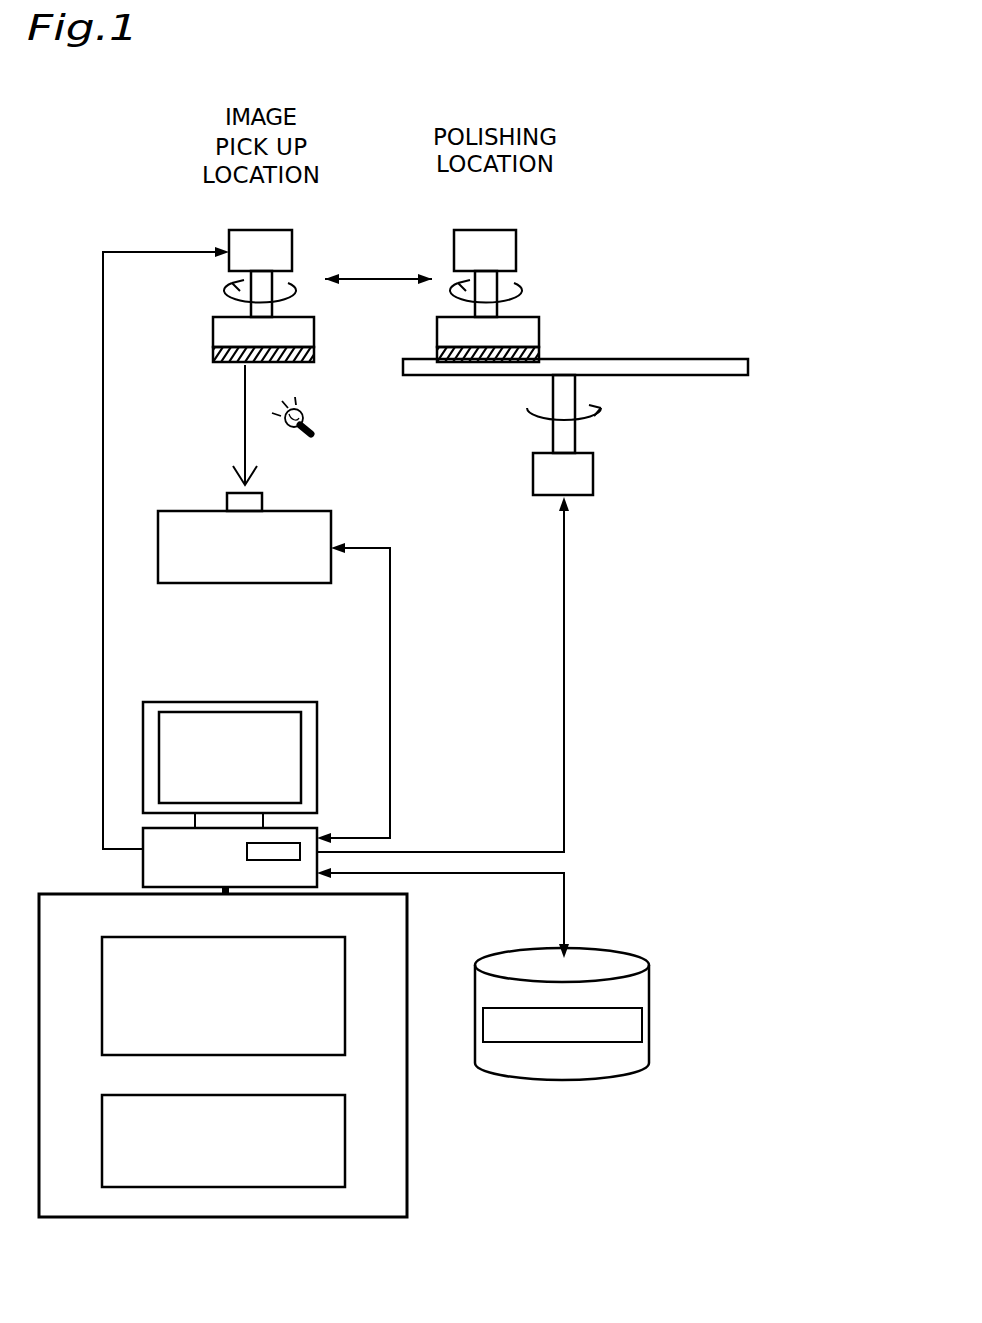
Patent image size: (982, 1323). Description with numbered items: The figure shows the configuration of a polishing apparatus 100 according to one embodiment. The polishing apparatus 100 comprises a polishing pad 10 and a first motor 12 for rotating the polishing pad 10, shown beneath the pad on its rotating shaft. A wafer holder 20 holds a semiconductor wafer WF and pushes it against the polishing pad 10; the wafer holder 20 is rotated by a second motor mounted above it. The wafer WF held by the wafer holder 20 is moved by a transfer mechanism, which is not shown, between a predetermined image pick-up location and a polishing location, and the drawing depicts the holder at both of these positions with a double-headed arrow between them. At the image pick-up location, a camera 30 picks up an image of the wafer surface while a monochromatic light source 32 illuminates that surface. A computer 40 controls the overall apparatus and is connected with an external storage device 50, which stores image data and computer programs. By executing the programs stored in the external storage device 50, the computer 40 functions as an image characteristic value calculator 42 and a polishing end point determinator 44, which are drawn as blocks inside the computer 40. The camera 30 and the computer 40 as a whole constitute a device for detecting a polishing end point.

The polishing apparatus 100 is at (687, 210).
The polishing pad 10 is at (648, 358).
The first motor 12 is at (594, 472).
The wafer holder 20 is at (523, 313).
The semiconductor wafer WF is at (543, 353).
The camera 30 is at (290, 511).
The monochromatic light source 32 is at (309, 411).
The computer 40 is at (267, 702).
The image characteristic value calculator 42 is at (257, 937).
The polishing end point determinator 44 is at (258, 1095).
The external storage device 50 is at (623, 963).